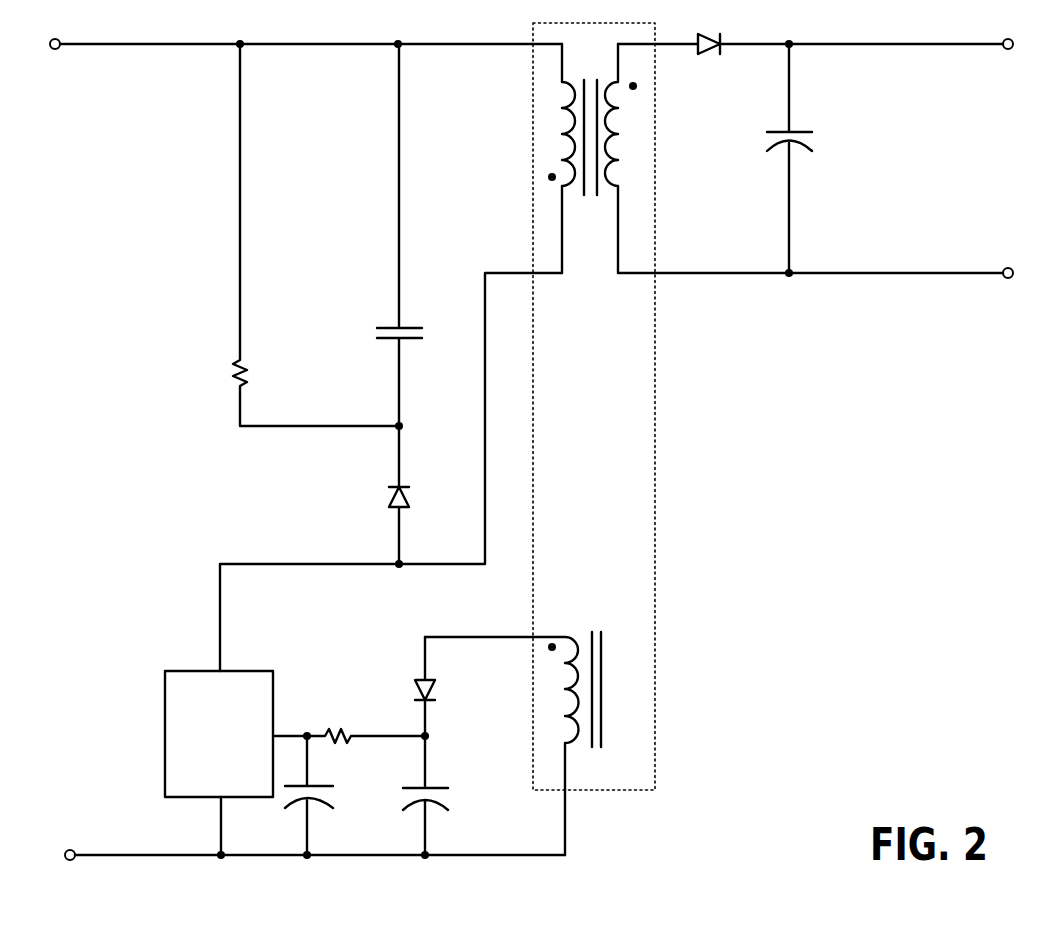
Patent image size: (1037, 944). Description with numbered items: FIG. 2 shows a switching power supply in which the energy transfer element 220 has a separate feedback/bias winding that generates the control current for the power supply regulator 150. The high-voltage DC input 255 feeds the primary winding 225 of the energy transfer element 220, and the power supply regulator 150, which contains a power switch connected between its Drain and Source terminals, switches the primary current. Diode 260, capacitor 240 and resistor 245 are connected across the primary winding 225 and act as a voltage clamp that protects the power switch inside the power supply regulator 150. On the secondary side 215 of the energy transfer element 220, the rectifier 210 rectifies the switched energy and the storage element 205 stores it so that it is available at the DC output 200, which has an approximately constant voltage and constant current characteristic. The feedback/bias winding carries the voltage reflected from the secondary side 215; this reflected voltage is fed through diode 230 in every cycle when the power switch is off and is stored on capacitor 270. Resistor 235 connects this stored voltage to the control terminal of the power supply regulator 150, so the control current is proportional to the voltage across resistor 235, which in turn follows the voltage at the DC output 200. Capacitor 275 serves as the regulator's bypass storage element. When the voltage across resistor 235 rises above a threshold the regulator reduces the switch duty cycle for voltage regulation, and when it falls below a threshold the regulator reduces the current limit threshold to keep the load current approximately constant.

The power supply regulator 150 is at (165, 720).
The DC output 200 is at (960, 158).
The storage element 205 is at (777, 158).
The rectifier 210 is at (810, 63).
The secondary side 215 is at (620, 147).
The energy transfer element 220 is at (655, 398).
The primary winding 225 is at (553, 138).
The diode 230 is at (440, 690).
The resistor 235 is at (338, 716).
The capacitor 240 is at (412, 322).
The resistor 245 is at (258, 369).
The HV DC input 255 is at (301, 449).
The diode 260 is at (387, 498).
The capacitor 270 is at (445, 795).
The capacitor 275 is at (335, 795).